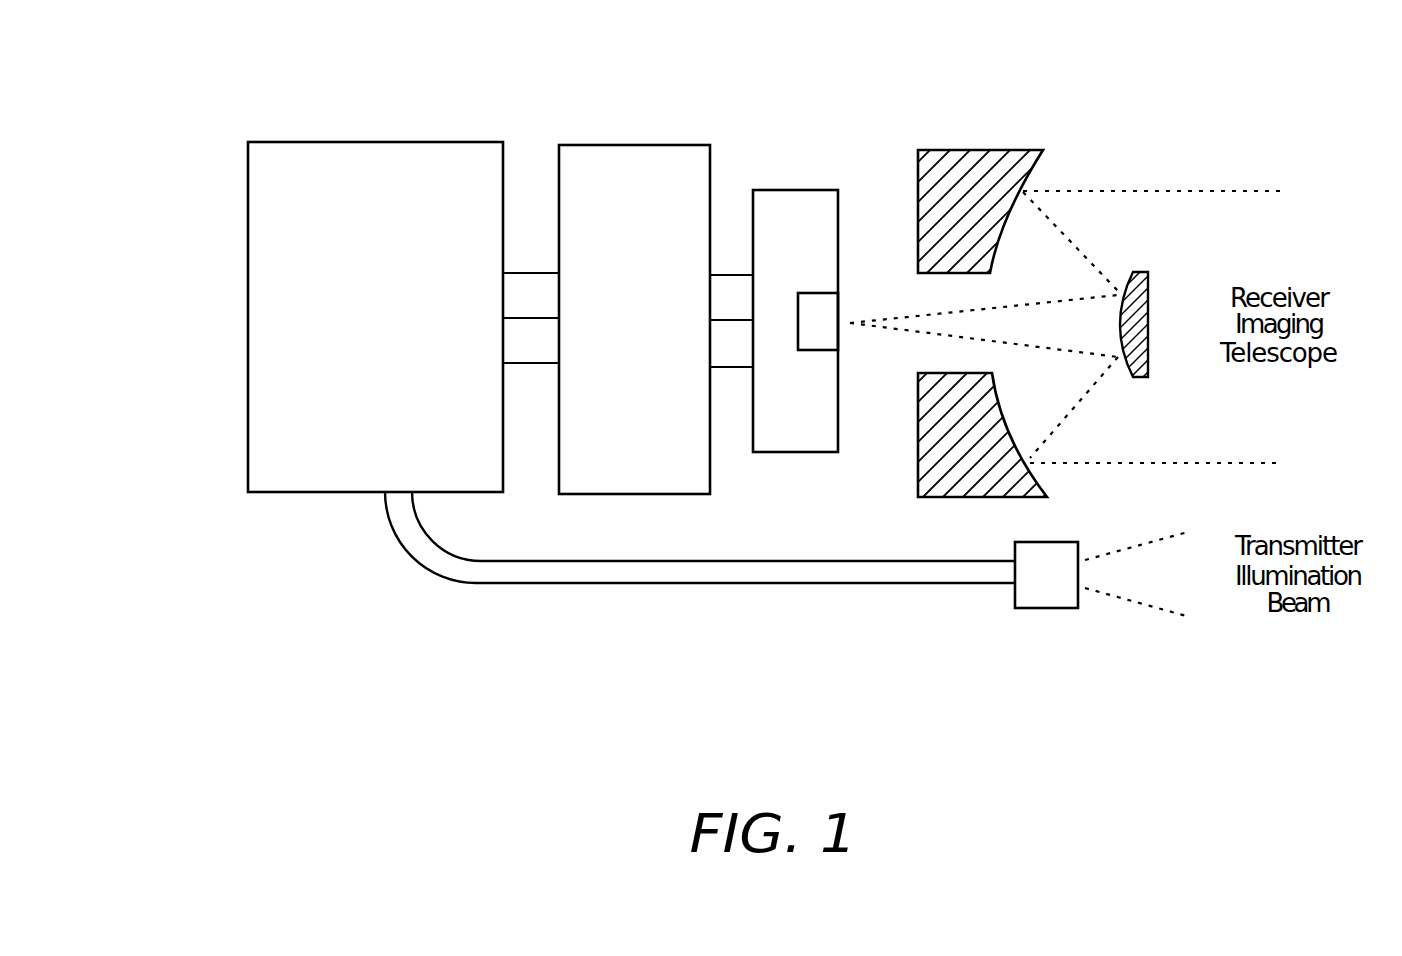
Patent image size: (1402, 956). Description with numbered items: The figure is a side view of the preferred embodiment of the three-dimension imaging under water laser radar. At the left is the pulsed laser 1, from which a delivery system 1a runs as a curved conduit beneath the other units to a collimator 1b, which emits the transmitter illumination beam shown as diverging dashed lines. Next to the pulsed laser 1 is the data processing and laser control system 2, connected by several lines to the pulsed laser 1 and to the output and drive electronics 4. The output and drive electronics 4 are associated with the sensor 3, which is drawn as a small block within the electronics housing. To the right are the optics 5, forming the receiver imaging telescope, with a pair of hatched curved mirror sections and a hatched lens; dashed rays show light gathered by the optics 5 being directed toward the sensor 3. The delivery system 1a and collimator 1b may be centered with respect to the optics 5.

The pulsed laser 1 is at (348, 140).
The delivery system 1a is at (527, 583).
The collimator 1b is at (1038, 613).
The data processing and laser control system 2 is at (607, 140).
The sensor 3 is at (817, 362).
The output and drive electronics 4 is at (793, 203).
The optics 5 is at (1143, 270).